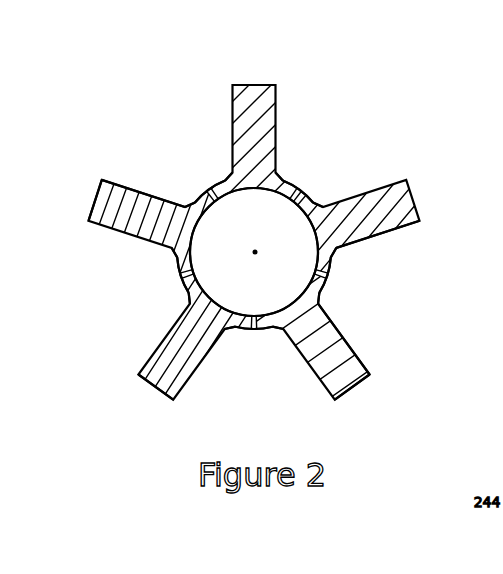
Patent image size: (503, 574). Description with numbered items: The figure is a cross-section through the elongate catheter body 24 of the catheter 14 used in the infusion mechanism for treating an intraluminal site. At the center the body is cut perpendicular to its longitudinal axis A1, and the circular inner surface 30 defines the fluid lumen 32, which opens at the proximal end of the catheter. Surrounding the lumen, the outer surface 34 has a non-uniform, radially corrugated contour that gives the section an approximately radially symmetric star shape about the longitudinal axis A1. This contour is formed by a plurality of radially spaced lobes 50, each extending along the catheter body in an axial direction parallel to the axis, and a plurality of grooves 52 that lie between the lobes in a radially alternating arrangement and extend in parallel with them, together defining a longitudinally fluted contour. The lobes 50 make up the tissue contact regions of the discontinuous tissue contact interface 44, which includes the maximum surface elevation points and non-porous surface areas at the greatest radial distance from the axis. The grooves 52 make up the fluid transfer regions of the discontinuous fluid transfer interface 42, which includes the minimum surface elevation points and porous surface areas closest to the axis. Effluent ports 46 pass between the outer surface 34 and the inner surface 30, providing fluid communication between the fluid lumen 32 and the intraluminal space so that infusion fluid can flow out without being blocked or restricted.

The catheter 14 is at (414, 90).
The elongate catheter body 24 is at (97, 207).
The inner surface 30 is at (251, 193).
The fluid lumen 32 is at (218, 283).
The outer surface 34 is at (137, 183).
The fluid transfer interface 42 is at (350, 243).
The tissue contact interface 44 is at (160, 390).
The effluent ports 46 is at (212, 185).
The lobes 50 is at (268, 97).
The grooves 52 is at (290, 165).
The longitudinal axis A1 is at (257, 253).